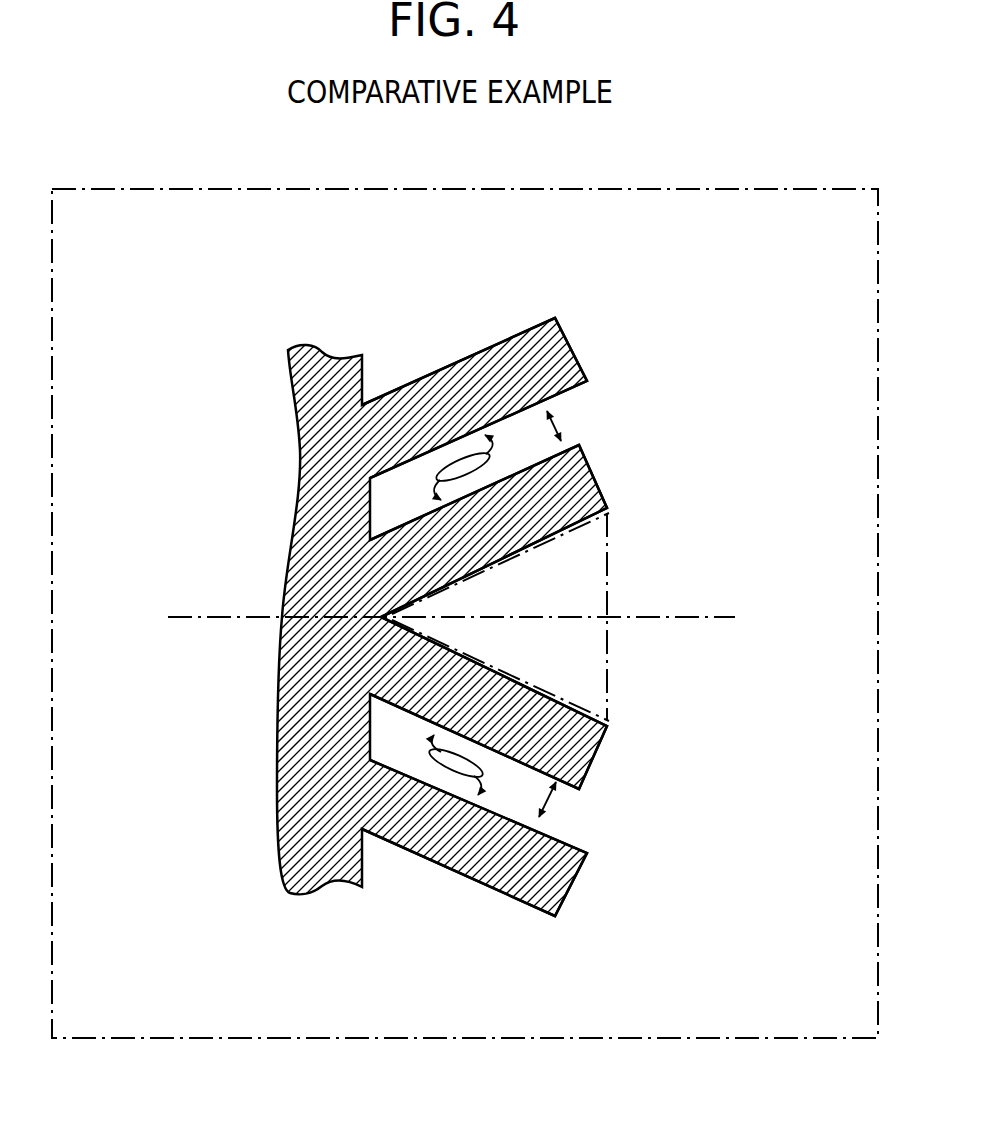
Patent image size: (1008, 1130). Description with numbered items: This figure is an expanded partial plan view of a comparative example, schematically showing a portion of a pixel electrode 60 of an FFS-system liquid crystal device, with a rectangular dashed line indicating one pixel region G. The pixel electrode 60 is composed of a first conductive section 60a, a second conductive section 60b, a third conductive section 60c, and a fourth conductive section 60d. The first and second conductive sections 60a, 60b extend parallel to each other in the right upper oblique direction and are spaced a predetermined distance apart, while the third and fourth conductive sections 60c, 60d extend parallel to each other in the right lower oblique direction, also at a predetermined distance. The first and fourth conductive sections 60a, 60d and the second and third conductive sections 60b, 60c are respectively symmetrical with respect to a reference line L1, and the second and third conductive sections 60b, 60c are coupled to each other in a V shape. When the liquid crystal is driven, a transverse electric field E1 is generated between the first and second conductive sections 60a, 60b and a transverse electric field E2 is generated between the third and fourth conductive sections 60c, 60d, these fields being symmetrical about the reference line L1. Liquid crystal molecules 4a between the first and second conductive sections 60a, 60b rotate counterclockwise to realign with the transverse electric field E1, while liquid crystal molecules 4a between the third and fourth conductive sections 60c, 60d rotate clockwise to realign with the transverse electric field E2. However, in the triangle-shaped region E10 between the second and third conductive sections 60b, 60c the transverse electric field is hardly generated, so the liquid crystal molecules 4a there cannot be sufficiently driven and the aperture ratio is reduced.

The pixel region G is at (717, 189).
The reference line L1 is at (188, 617).
The pixel electrode 60 is at (326, 357).
The first conductive section 60a is at (573, 345).
The second conductive section 60b is at (602, 483).
The third conductive section 60c is at (597, 767).
The fourth conductive section 60d is at (578, 891).
The triangle-shaped region E10 is at (608, 604).
The transverse electric field E1 is at (572, 422).
The transverse electric field E2 is at (569, 808).
The liquid crystal molecules 4a is at (492, 470).